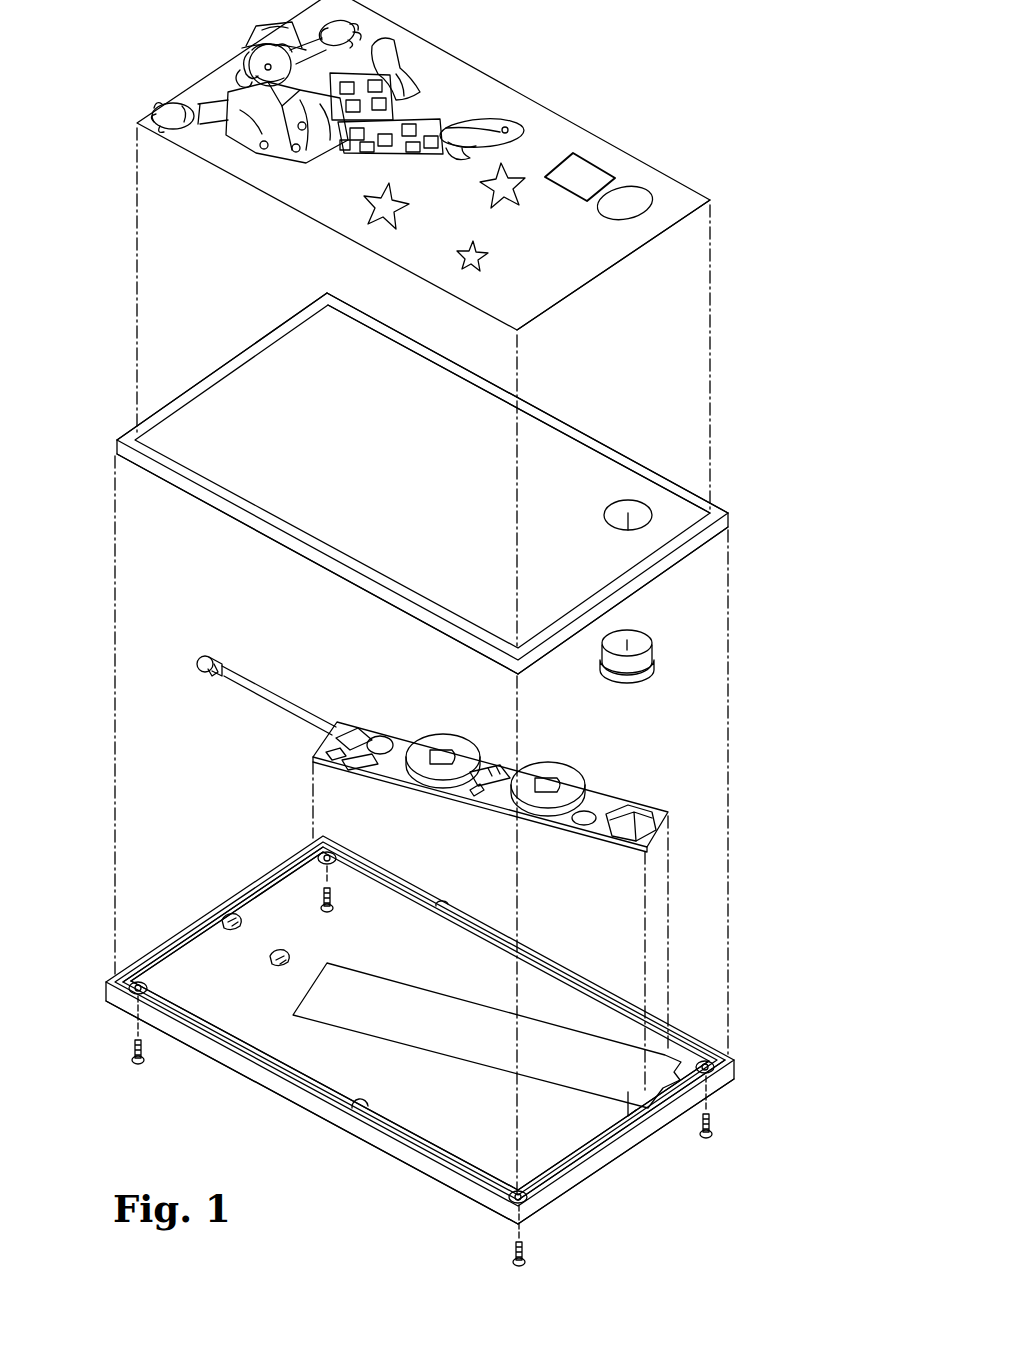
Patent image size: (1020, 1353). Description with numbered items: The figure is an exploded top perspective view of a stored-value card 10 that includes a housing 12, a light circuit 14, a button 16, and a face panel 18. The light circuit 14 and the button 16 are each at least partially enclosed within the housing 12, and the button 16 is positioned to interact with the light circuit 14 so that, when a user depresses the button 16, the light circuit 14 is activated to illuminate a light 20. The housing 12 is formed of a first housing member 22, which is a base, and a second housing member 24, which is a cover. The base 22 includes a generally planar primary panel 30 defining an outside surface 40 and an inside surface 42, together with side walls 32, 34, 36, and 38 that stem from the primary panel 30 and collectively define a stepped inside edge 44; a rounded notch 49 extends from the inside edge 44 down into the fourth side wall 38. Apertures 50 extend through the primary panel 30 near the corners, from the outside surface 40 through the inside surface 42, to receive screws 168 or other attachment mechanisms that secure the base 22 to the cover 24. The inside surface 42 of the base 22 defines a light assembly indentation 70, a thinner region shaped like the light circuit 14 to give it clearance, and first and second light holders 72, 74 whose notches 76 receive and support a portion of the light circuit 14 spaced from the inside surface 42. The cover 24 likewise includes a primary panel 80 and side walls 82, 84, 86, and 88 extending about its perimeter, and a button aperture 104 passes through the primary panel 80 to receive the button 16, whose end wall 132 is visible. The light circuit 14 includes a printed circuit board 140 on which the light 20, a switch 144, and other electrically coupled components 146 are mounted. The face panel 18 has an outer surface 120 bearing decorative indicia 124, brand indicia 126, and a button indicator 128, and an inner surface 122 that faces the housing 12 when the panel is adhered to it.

The stored-value card 10 is at (100, 148).
The housing 12 is at (191, 520).
The light circuit 14 is at (608, 778).
The button 16 is at (648, 676).
The face panel 18 is at (683, 196).
The light 20 is at (207, 657).
The first housing member 22 is at (190, 975).
The second housing member 24 is at (222, 430).
The primary panel 30 is at (590, 1168).
The side wall 32 is at (578, 970).
The side wall 34 is at (650, 1122).
The side wall 36 is at (430, 1170).
The fourth side wall 38 is at (257, 888).
The outside surface 40 is at (300, 1100).
The bottom edge 42 is at (560, 1190).
The inside edge 44 is at (444, 905).
The notch 49 is at (212, 918).
The apertures 50 is at (330, 850).
The light assembly indentation 70 is at (628, 1120).
The first light holder 72 is at (225, 918).
The second light holder 74 is at (270, 960).
The notches 76 is at (281, 940).
The primary panel 80 is at (558, 457).
The first side wall 82 is at (628, 455).
The second side wall 84 is at (546, 650).
The third side wall 86 is at (400, 601).
The fourth side wall 88 is at (252, 338).
The button aperture 104 is at (634, 514).
The first, outer surface 120 is at (437, 64).
The second, inner surface 122 is at (566, 303).
The decorative indicia 124 is at (437, 108).
The brand indicia 126 is at (600, 165).
The button indicator 128 is at (627, 220).
The end wall 132 is at (641, 642).
The printed circuit board 140 is at (398, 738).
The switch 144 is at (628, 818).
The light circuit component 146 is at (276, 700).
The screw 168 is at (139, 1064).